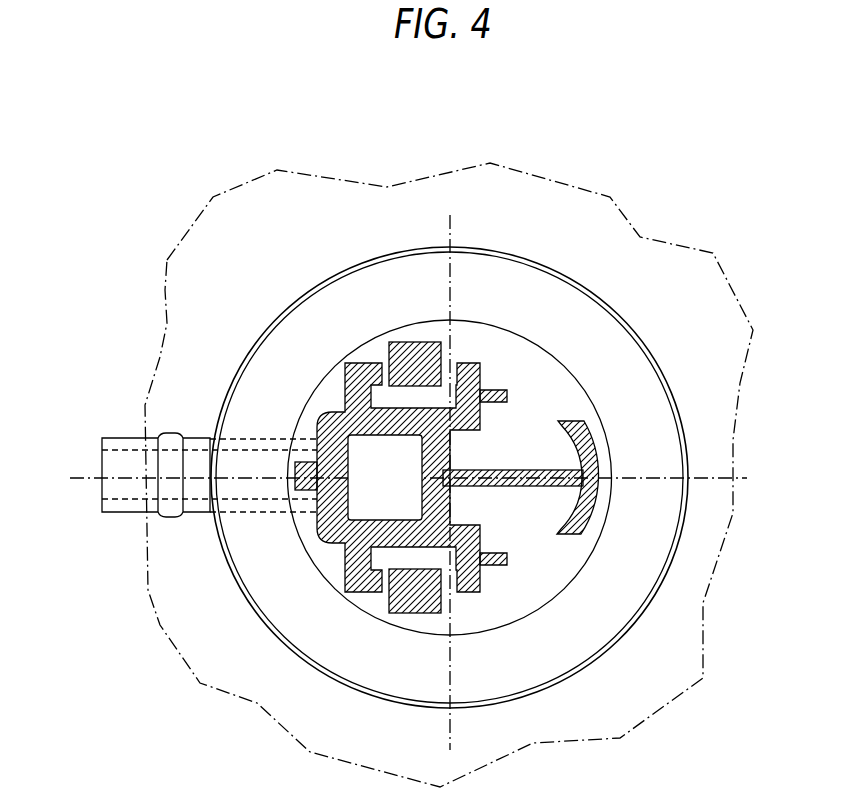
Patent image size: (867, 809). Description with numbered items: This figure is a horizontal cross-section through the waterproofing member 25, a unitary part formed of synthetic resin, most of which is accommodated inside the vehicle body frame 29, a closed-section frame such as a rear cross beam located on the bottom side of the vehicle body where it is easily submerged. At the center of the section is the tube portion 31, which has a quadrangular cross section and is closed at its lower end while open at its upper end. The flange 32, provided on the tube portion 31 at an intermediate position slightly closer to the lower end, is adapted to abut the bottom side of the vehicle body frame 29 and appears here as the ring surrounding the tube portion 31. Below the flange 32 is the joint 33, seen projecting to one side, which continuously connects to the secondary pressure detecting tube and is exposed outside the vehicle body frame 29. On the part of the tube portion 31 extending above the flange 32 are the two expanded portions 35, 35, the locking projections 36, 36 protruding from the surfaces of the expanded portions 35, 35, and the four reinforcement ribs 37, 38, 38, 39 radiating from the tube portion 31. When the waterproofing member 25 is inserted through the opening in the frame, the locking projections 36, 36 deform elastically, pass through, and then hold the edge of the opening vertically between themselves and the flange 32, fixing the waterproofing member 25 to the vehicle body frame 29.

The waterproofing member 25 is at (604, 252).
The vehicle body frame 29 is at (276, 190).
The tube portion 31 is at (382, 520).
The flange 32 is at (637, 375).
The joint 33 is at (123, 507).
The expanded portions 35 is at (465, 358).
The locking projections 36 is at (423, 342).
The reinforcement rib 37 is at (305, 515).
The reinforcement ribs 38 is at (507, 397).
The reinforcement rib 39 is at (583, 538).